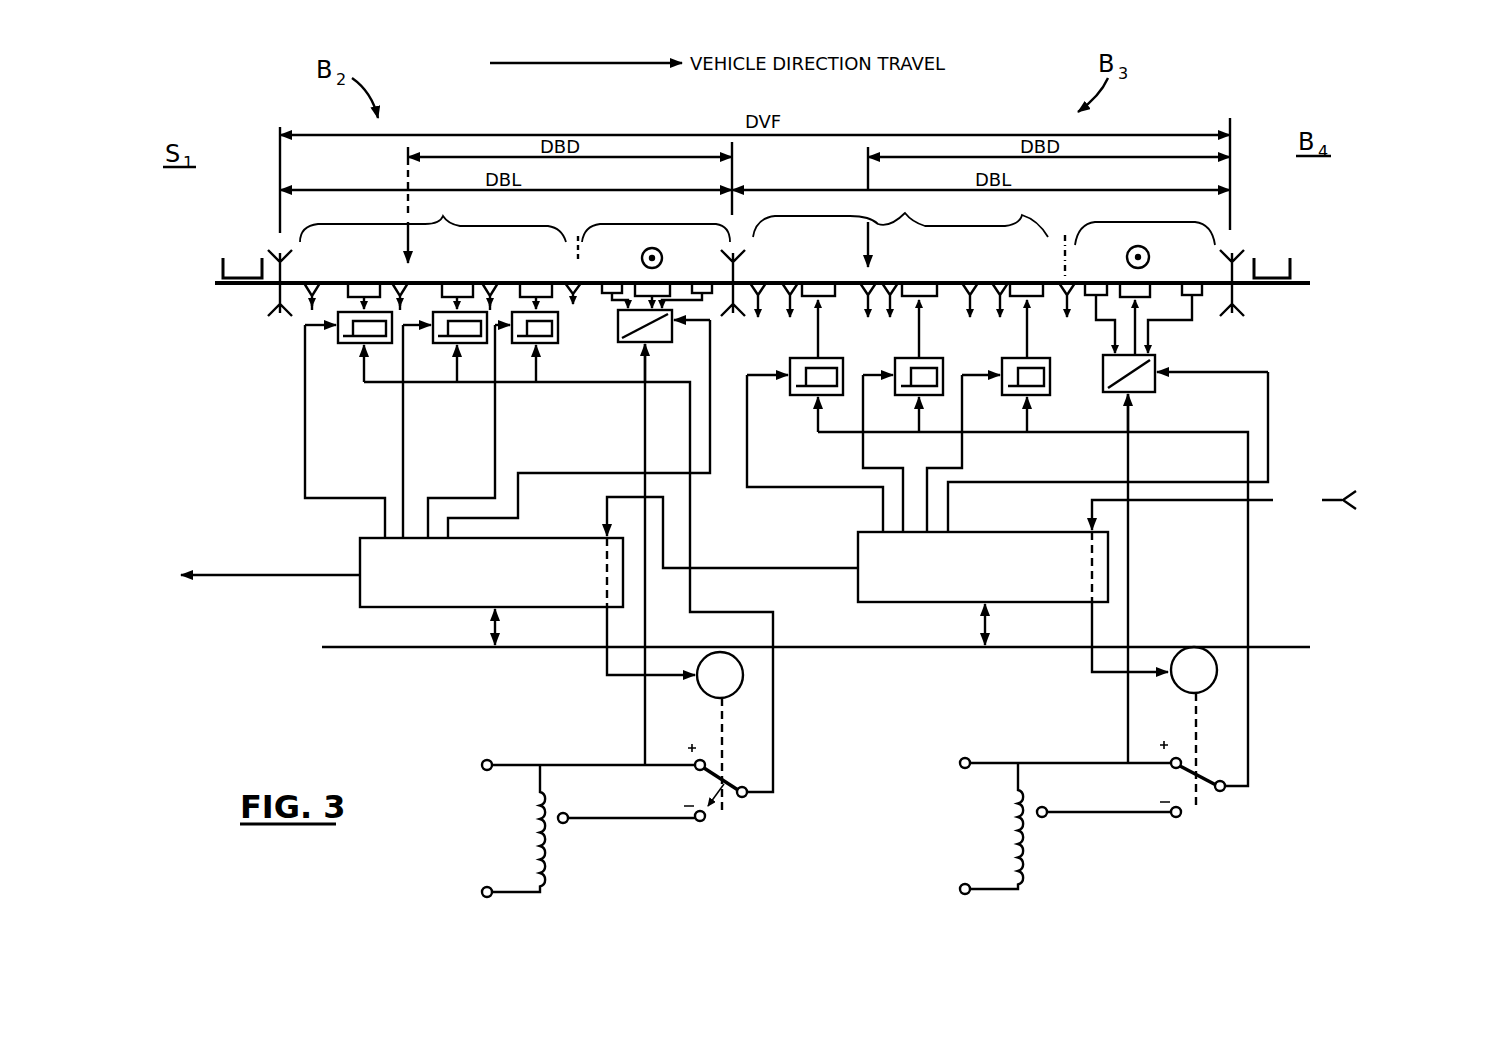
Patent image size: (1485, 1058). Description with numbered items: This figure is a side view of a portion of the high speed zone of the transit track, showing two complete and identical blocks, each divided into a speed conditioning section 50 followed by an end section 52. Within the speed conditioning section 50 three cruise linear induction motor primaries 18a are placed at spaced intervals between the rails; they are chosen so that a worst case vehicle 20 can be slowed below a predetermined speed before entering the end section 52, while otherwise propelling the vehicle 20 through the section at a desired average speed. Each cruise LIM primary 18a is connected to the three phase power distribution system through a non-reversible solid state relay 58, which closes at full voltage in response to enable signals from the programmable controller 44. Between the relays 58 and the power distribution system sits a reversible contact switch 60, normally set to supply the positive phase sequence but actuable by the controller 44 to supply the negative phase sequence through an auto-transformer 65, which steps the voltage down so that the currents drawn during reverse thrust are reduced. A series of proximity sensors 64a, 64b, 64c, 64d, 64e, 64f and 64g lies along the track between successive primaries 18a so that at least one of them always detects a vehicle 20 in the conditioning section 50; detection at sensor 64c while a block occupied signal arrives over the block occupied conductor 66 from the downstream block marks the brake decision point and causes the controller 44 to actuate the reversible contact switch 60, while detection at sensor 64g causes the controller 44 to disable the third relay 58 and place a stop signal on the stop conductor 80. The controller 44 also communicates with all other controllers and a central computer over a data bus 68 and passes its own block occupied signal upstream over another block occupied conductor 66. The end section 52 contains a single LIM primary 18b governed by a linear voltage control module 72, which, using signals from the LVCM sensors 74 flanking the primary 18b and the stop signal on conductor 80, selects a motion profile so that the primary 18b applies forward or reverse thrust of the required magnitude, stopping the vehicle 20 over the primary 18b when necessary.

The vehicle 20 is at (245, 262).
The speed conditioning section 50 is at (653, 232).
The sensor 64a is at (314, 281).
The sensor 64b is at (318, 303).
The sensor 64c is at (408, 290).
The sensor 64d is at (403, 306).
The sensor 64e is at (492, 282).
The sensor 64f is at (491, 306).
The sensor 64g is at (573, 280).
The cruise linear induction motor primary 18a is at (366, 282).
The LIM primary 18b is at (672, 282).
The non-reversible solid state relay 58 is at (356, 342).
The linear voltage control module 72 is at (660, 335).
The stop conductor 80 is at (711, 355).
The LVCM sensor 74 is at (609, 281).
The end section 52 is at (1168, 212).
The programmable controller 44 is at (563, 598).
The block occupied conductor 66 is at (312, 574).
The data bus 68 is at (420, 649).
The reversible contact switch 60 is at (735, 735).
The auto-transformer 65 is at (556, 862).